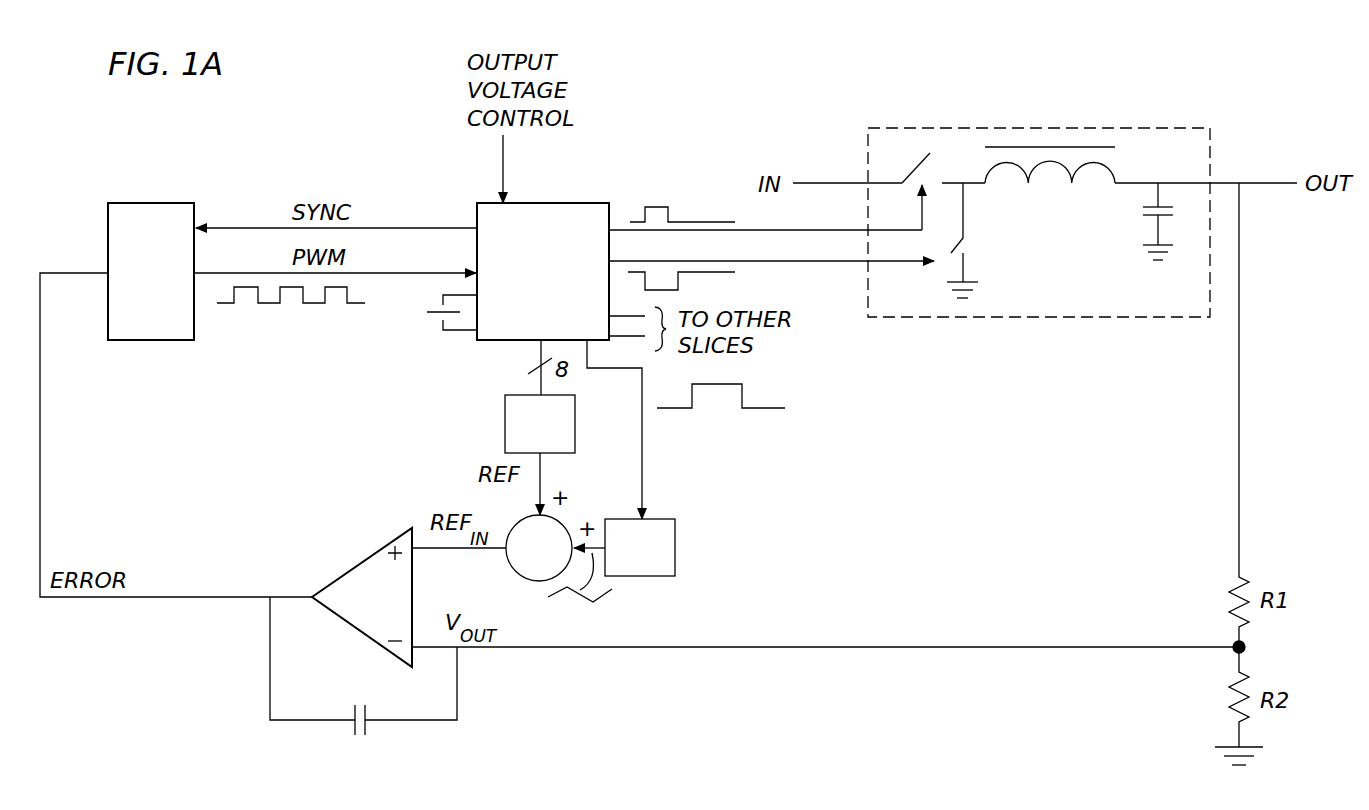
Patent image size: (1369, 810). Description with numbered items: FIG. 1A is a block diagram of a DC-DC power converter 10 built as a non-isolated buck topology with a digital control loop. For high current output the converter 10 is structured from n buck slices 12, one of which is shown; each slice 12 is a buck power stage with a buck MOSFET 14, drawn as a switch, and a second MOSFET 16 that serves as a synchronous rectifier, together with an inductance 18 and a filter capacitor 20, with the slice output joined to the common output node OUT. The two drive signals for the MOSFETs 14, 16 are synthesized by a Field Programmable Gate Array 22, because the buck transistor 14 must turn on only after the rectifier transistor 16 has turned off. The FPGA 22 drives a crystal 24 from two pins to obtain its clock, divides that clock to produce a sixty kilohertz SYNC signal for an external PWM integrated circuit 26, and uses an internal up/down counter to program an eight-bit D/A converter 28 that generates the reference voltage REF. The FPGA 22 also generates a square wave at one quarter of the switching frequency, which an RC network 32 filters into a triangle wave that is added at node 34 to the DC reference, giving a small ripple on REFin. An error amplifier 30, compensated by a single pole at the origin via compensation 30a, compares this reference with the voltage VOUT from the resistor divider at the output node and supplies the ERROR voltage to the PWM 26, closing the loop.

The DC-DC power converter 10 is at (601, 684).
The buck slice 12 is at (918, 317).
The buck MOSFET 14 is at (903, 182).
The second MOSFET 16 is at (965, 243).
The inductance 18 is at (1050, 185).
The filter capacitor 20 is at (1140, 222).
The Field Programmable Gate Array 22 is at (540, 203).
The crystal 24 is at (435, 318).
The PWM integrated circuit 26 is at (196, 210).
The D/A converter 28 is at (576, 423).
The error amplifier 30 is at (370, 558).
The compensation 30a is at (366, 727).
The RC network 32 is at (677, 546).
The node 34 is at (519, 522).